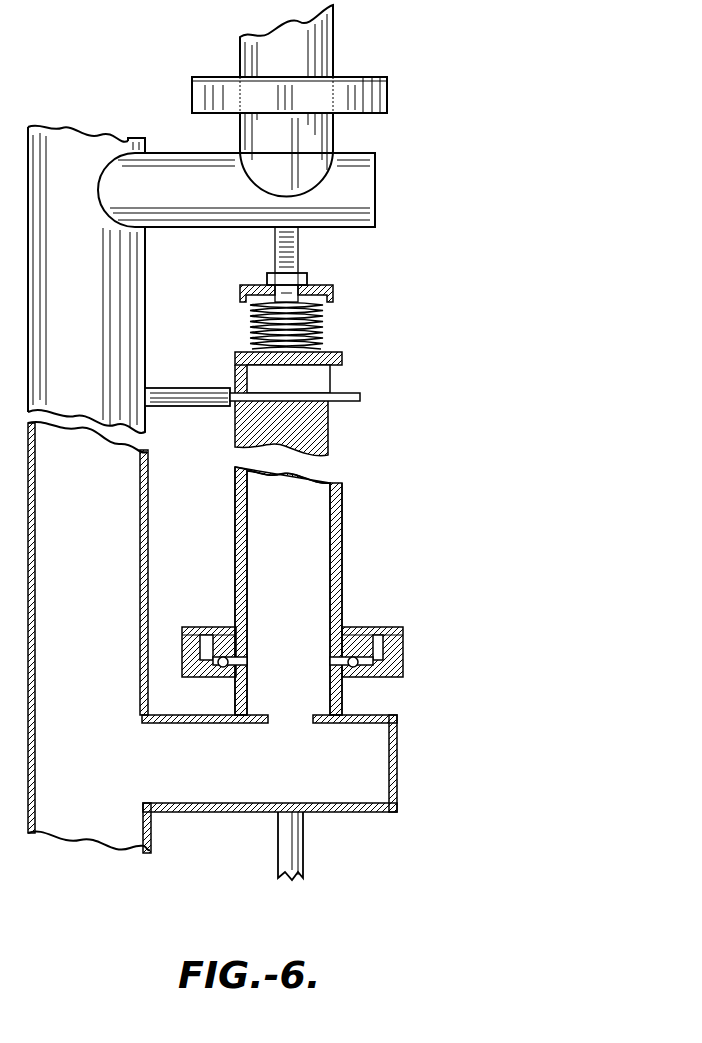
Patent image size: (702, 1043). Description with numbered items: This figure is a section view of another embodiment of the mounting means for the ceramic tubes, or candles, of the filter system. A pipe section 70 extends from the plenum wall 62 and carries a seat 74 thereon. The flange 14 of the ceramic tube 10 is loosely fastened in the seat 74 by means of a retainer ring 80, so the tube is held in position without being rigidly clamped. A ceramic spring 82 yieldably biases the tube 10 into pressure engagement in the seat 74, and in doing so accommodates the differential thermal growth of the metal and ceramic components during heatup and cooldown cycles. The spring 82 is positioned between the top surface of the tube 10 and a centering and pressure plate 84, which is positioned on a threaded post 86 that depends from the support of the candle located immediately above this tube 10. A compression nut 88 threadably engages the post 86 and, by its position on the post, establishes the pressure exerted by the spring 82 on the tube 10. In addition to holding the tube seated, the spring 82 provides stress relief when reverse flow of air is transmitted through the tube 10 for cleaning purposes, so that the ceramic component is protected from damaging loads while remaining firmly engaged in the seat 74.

The plenum wall 62 is at (78, 148).
The threaded post 86 is at (275, 238).
The compression nut 88 is at (307, 280).
The centering and pressure plate 84 is at (240, 290).
The ceramic spring 82 is at (323, 328).
The tube 10 is at (238, 554).
The flange 14 is at (233, 627).
The retainer ring 80 is at (377, 627).
The seat 74 is at (383, 678).
The pipe section 70 is at (329, 812).